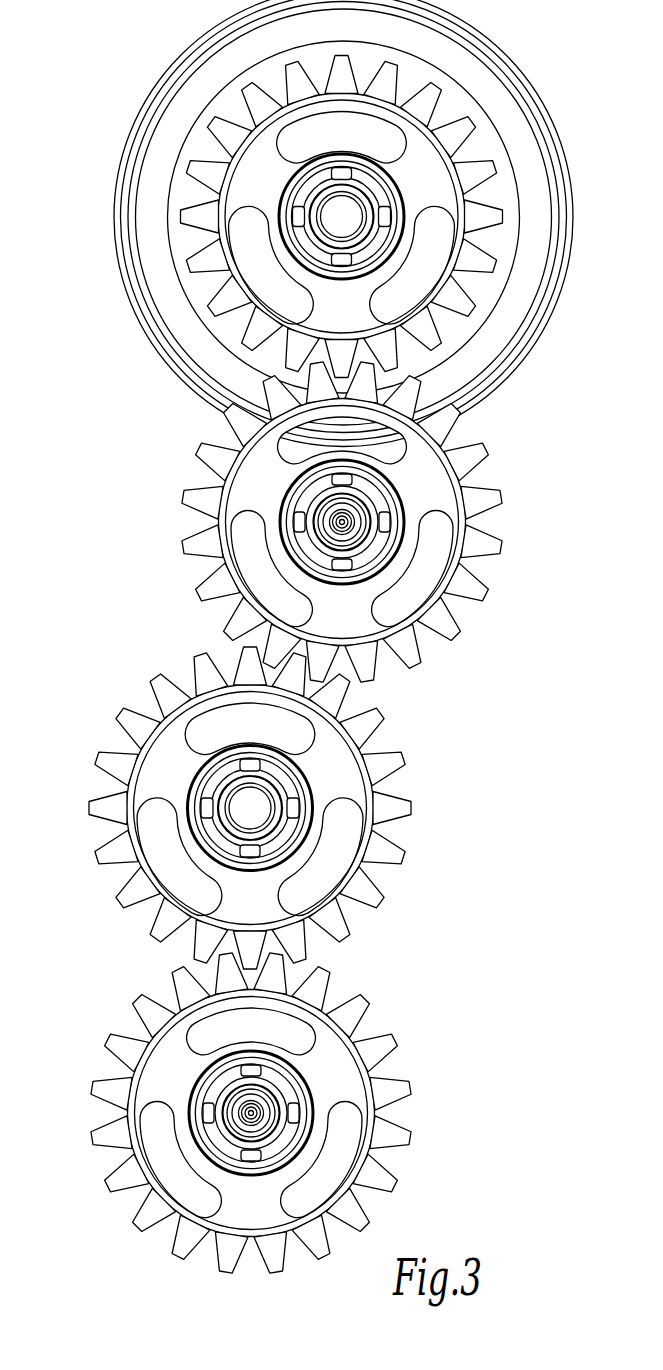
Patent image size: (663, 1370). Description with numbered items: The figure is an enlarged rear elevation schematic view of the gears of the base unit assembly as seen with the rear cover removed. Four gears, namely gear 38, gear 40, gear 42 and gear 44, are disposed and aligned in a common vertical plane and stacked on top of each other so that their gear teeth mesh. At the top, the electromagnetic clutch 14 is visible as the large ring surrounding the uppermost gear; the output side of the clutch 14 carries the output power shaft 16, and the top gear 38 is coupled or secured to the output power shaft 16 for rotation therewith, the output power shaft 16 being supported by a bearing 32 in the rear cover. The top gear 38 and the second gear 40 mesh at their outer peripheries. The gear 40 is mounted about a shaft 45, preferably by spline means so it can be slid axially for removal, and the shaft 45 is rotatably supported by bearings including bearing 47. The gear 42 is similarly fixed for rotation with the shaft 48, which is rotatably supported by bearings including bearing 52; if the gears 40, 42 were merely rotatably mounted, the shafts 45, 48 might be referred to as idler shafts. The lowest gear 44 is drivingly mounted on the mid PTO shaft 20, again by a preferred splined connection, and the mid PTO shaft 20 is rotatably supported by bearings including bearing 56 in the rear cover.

The electromagnetic clutch 14 is at (200, 38).
The output power shaft 16 is at (338, 210).
The mid PTO shaft 20 is at (252, 1114).
The bearing 32 is at (288, 186).
The gear 38 is at (301, 191).
The gear 40 is at (184, 496).
The gear 42 is at (120, 712).
The gear 44 is at (92, 1081).
The shaft 45 is at (344, 528).
The bearing 47 is at (307, 498).
The shaft 48 is at (250, 809).
The bearing 52 is at (223, 770).
The bearing 56 is at (215, 1088).